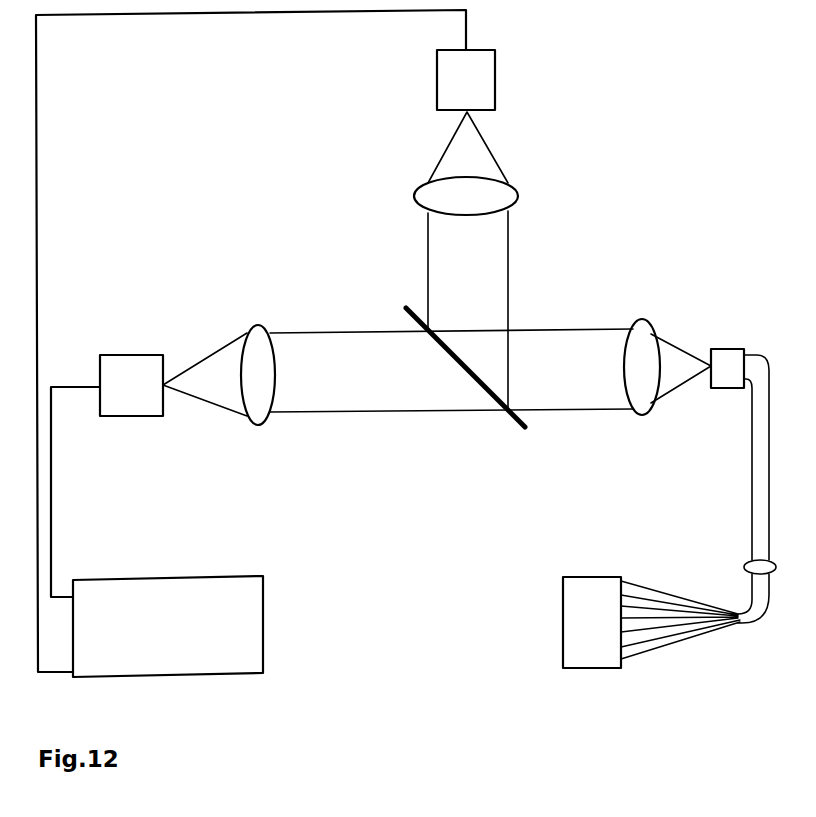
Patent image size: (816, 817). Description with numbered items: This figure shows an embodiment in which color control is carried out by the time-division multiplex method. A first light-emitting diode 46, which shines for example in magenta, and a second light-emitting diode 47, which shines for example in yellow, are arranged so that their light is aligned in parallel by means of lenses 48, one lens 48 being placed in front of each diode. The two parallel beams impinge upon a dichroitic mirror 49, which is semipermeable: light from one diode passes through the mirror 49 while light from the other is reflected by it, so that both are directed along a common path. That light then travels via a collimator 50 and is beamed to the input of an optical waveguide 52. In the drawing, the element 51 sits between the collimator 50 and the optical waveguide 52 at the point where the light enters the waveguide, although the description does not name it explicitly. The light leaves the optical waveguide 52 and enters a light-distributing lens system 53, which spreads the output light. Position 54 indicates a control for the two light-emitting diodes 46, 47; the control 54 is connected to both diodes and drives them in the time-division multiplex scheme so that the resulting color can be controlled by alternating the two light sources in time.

The first light-emitting diode 46 is at (135, 368).
The second light-emitting diode 47 is at (482, 77).
The lenses 48 is at (505, 196).
The dichroitic mirror 49 is at (478, 387).
The collimator 50 is at (642, 328).
The fiber coupler 51 is at (733, 358).
The optical waveguide 52 is at (758, 453).
The light-distributing lens system 53 is at (590, 590).
The control 54 is at (200, 603).